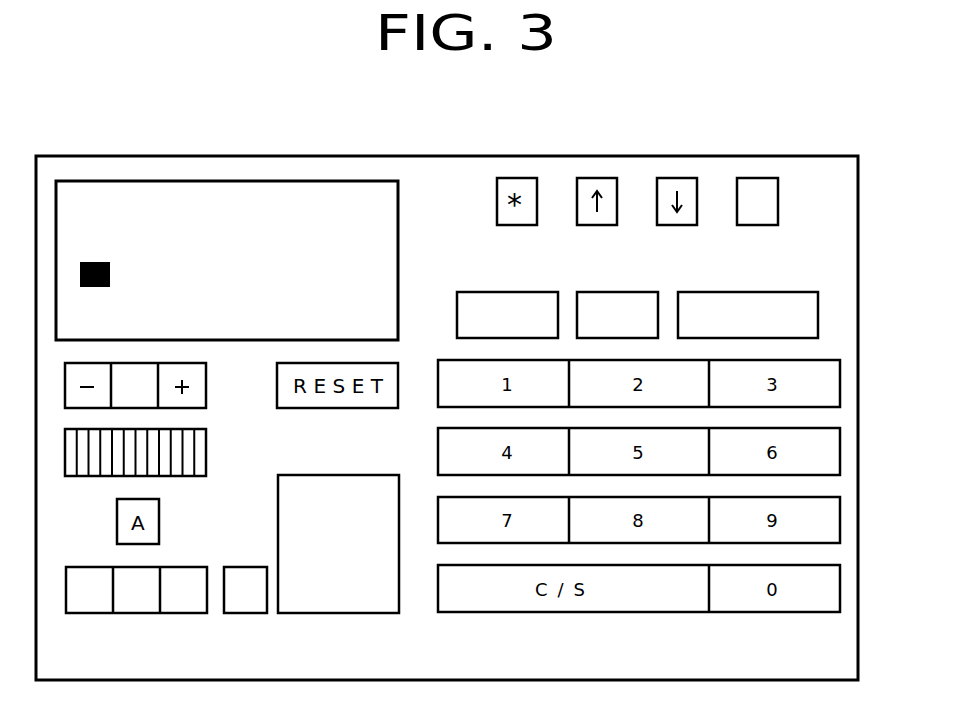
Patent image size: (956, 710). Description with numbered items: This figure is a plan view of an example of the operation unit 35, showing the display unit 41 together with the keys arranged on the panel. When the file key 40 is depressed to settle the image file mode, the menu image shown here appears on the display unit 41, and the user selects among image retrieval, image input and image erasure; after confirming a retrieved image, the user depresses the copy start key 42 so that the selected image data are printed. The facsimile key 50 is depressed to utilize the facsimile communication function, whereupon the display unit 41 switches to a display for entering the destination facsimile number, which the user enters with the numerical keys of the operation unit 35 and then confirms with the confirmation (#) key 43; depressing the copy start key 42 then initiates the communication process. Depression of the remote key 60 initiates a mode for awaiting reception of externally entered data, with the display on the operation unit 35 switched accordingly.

The operation unit 35 is at (678, 156).
The display unit 41 is at (260, 180).
The confirmation (#) key 43 is at (779, 197).
The file key 40 is at (518, 291).
The facsimile key 50 is at (615, 291).
The remote key 60 is at (739, 291).
The copy start key 42 is at (350, 613).